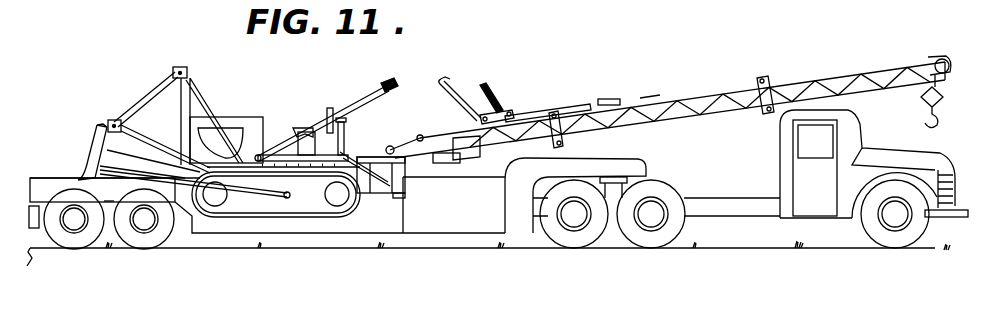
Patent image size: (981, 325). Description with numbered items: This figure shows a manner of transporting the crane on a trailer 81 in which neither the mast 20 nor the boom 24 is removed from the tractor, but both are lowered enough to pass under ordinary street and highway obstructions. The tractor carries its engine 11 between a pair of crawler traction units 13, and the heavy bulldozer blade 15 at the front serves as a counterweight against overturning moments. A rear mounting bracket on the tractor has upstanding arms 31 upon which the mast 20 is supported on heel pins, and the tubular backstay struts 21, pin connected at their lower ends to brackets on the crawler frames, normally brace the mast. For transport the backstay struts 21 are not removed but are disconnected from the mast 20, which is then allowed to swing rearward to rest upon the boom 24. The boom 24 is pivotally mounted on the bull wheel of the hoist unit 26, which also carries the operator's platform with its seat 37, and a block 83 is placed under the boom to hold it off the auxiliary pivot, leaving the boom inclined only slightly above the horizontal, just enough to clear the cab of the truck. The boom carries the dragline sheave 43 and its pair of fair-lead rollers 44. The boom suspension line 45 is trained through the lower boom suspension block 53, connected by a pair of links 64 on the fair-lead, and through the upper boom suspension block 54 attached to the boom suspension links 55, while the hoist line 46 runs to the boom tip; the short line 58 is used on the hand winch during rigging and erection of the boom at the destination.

The trailer 81 is at (49, 182).
The bulldozer blade 15 is at (92, 137).
The engine 11 is at (232, 117).
The seat 37 is at (303, 128).
The tubular backstay struts 21 is at (358, 103).
The mast 20 is at (380, 90).
The upstanding arms 31 is at (346, 135).
The short line 58 is at (413, 95).
The links 64 is at (495, 112).
The lower boom suspension block 53 is at (526, 110).
The boom suspension line 45 is at (565, 105).
The upper boom suspension block 54 is at (607, 100).
The boom suspension links 55 is at (650, 98).
The hoist line 46 is at (920, 60).
The boom 24 is at (733, 113).
The block 83 is at (560, 150).
The fair-lead rollers 44 is at (468, 158).
The dragline sheave 43 is at (450, 163).
The hoist unit 26 is at (407, 182).
The crawler traction units 13 is at (273, 222).